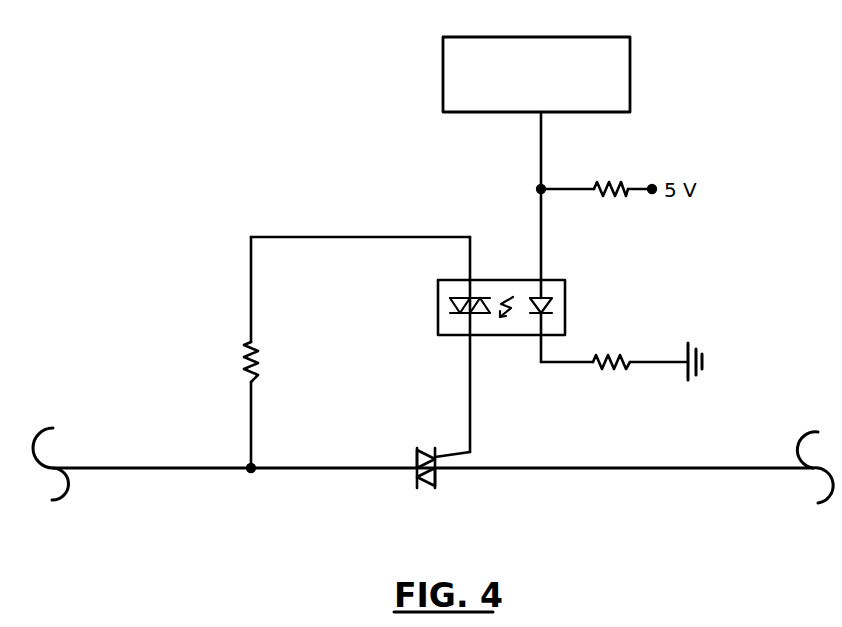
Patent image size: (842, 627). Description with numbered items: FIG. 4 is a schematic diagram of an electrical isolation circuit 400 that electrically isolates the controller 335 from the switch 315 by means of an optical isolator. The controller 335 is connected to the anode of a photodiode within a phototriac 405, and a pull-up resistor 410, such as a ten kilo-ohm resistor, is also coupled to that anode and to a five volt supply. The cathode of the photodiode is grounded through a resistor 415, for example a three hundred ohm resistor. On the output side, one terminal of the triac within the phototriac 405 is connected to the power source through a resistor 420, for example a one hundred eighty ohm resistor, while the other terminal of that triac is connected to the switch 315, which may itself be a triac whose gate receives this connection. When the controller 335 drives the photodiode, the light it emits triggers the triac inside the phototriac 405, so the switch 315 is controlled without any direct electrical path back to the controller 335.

The electrical isolation circuit 400 is at (288, 44).
The controller 335 is at (516, 96).
The pull-up resistor 410 is at (615, 206).
The resistor 415 is at (612, 378).
The resistor 420 is at (280, 362).
The phototriac 405 is at (501, 322).
The switch 315 is at (428, 484).